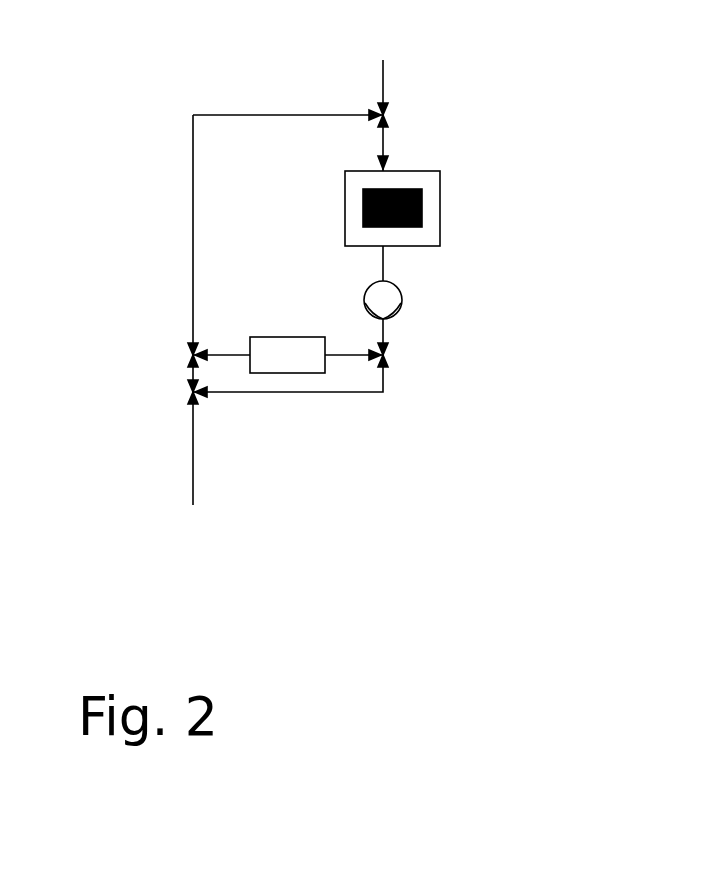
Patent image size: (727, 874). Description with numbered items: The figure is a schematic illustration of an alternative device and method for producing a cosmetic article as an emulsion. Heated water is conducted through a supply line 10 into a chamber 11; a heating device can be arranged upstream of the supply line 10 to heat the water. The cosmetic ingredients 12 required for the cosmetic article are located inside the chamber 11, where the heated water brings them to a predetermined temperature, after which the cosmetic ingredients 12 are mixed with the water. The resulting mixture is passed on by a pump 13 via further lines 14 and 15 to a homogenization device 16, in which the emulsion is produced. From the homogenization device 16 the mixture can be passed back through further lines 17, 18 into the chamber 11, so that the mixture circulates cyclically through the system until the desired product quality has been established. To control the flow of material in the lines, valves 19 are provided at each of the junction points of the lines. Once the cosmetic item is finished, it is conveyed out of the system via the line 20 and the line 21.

The supply line 10 is at (408, 67).
The chamber 11 is at (458, 167).
The cosmetic ingredients 12 is at (415, 208).
The pump 13 is at (425, 293).
The further line 14 is at (383, 262).
The further line 15 is at (342, 357).
The homogenization device 16 is at (270, 372).
The further line 17 is at (223, 355).
The further line 18 is at (193, 217).
The valve 19 is at (407, 95).
The line 20 is at (303, 393).
The line 21 is at (193, 454).